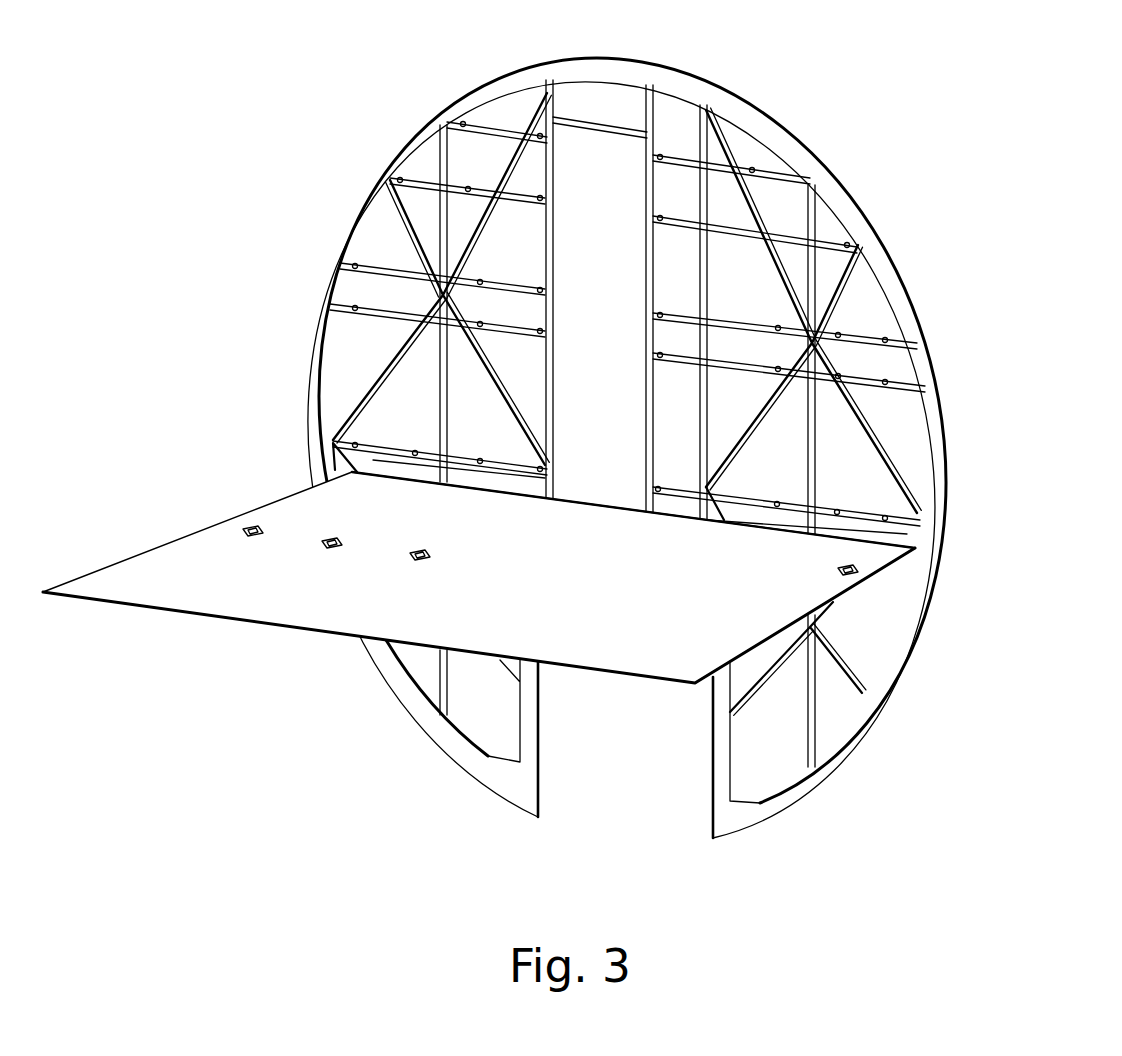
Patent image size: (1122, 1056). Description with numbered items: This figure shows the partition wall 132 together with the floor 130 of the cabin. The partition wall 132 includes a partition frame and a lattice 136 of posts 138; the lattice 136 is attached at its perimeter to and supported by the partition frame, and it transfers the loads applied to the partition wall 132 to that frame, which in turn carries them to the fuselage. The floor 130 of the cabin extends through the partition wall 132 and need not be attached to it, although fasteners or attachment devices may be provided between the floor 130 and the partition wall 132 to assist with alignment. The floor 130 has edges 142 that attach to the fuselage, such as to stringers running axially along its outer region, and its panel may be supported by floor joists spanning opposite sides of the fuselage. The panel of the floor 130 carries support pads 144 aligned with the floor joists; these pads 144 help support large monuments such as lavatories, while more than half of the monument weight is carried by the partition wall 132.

The floor 130 is at (599, 604).
The partition wall 132 is at (864, 132).
The lattice 136 is at (462, 210).
The posts 138 is at (377, 267).
The edges 142 is at (122, 606).
The support pads 144 is at (332, 540).